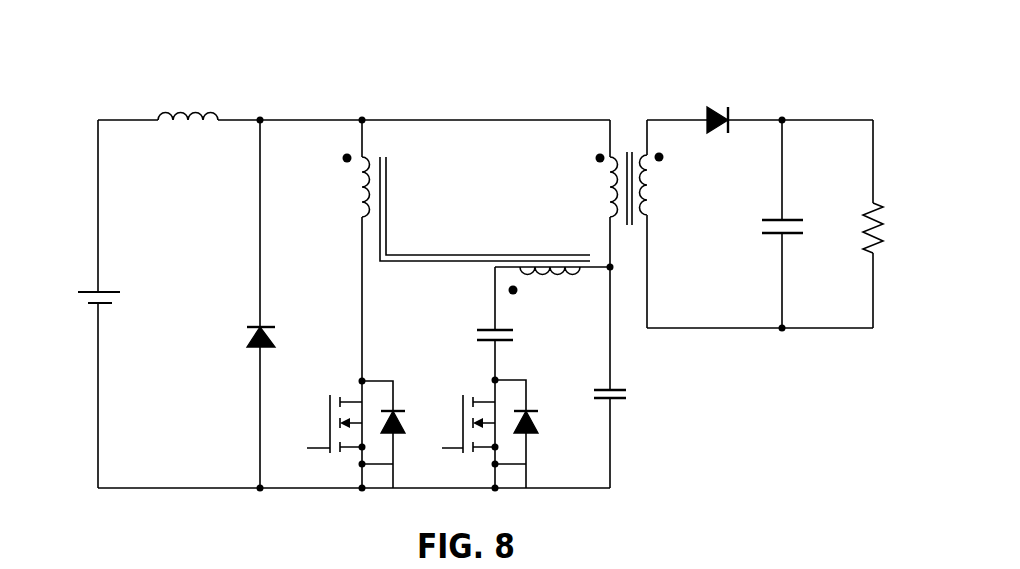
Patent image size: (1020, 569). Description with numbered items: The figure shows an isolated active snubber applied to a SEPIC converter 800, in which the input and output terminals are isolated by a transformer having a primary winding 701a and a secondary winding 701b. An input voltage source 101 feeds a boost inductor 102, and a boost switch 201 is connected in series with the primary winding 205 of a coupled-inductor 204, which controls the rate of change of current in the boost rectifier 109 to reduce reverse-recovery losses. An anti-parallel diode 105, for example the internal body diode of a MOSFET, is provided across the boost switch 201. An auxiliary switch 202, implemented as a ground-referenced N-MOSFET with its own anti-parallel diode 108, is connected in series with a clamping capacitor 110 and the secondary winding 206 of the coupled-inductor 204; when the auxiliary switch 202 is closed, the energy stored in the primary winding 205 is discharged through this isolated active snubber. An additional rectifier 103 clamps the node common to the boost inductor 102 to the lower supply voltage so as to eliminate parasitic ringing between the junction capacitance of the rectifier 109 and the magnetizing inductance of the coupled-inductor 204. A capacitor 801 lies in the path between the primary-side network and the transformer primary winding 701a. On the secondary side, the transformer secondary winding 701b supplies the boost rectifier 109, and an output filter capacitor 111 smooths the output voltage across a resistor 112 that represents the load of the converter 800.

The SEPIC converter 800 is at (580, 67).
The boost inductor 102 is at (212, 114).
The input voltage source 101 is at (114, 291).
The additional rectifier 103 is at (276, 338).
The primary winding 205 is at (362, 200).
The coupled-inductor 204 is at (457, 219).
The transformer primary winding 701a is at (610, 200).
The transformer secondary winding 701b is at (647, 203).
The secondary winding 206 is at (560, 278).
The clamping capacitor 110 is at (502, 344).
The boost switch 201 is at (327, 453).
The anti-parallel diode 105 is at (398, 405).
The auxiliary switch 202 is at (458, 453).
The anti-parallel diode 108 is at (528, 433).
The capacitor 801 is at (622, 386).
The boost rectifier 109 is at (732, 106).
The output filter capacitor 111 is at (793, 218).
The resistor 112 is at (880, 204).